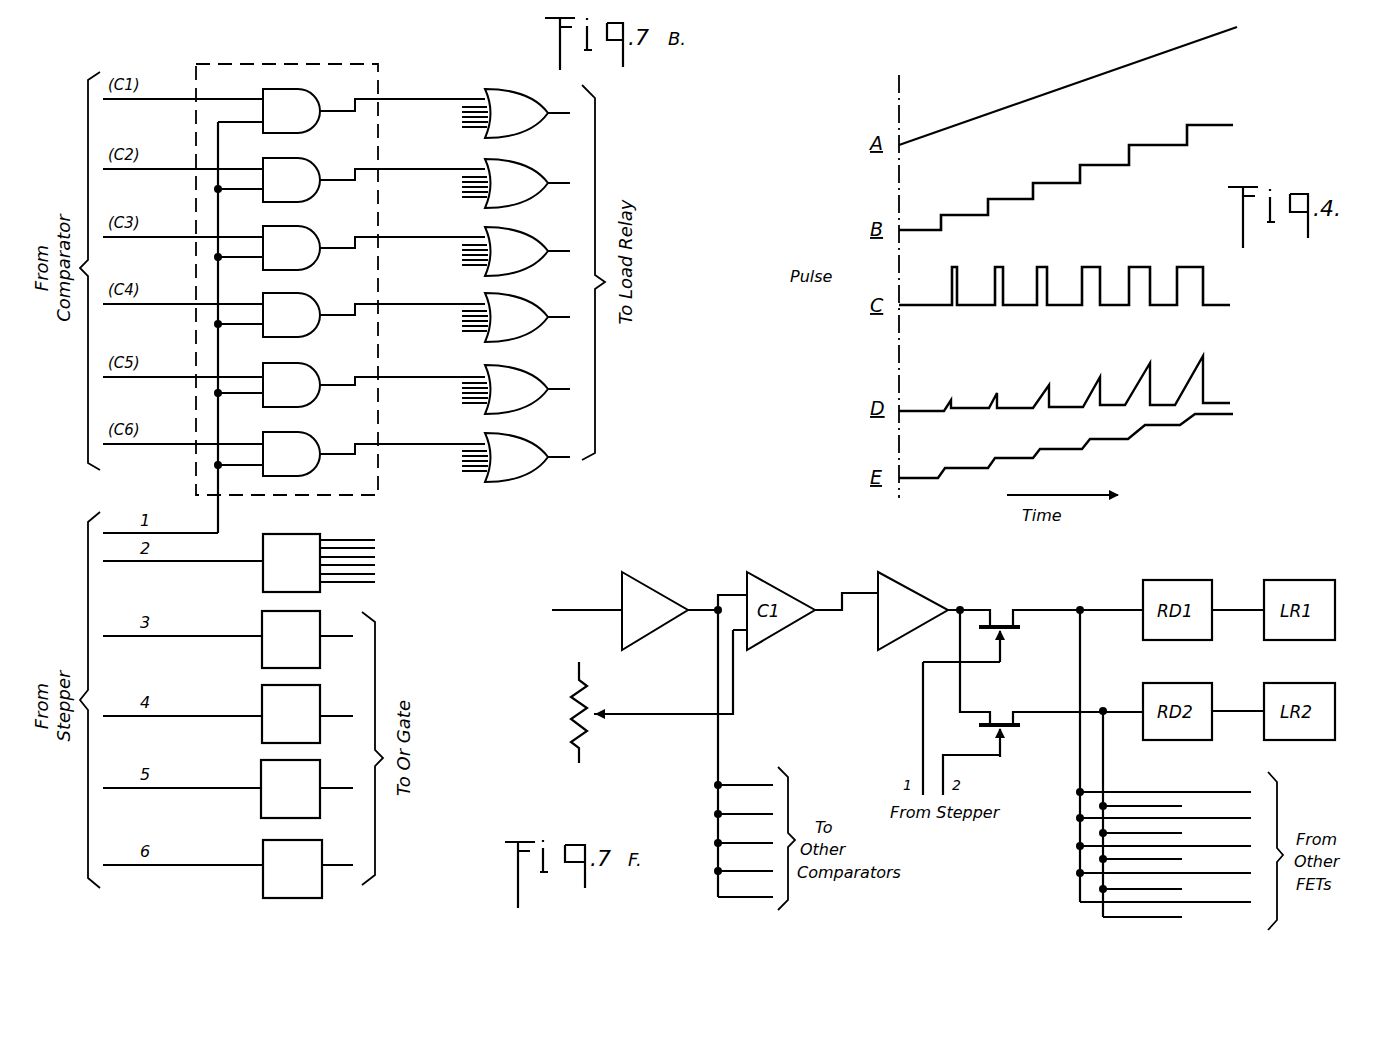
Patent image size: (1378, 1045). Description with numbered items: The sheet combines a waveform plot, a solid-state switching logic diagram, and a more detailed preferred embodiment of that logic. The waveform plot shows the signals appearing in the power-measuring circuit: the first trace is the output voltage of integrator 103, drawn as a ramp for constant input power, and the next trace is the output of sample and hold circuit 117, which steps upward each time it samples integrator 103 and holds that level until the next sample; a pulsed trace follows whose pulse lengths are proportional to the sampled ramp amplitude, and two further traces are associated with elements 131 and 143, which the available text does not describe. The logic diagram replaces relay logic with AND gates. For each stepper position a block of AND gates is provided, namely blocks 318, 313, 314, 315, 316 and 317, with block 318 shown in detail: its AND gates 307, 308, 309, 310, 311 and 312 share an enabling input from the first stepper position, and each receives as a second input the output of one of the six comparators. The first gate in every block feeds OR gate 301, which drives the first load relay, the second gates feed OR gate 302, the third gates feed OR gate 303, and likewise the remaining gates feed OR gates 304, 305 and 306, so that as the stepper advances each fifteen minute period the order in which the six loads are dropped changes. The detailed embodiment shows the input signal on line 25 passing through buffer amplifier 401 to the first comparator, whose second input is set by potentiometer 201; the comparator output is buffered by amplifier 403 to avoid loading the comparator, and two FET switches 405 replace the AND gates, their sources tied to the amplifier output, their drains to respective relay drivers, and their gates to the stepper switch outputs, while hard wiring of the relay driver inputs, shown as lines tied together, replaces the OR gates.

In FIG. 7F, the line 25 is at (578, 610).
In FIG. 7F, the potentiometer 201 is at (572, 727).
In FIG. 7B, the OR gate 301 is at (557, 90).
In FIG. 7B, the OR gate 302 is at (557, 160).
In FIG. 7B, the OR gate 303 is at (557, 228).
In FIG. 7B, the OR gate 304 is at (557, 292).
In FIG. 7B, the OR gate 305 is at (557, 365).
In FIG. 7B, the OR gate 306 is at (557, 434).
In FIG. 7B, the AND gate 307 is at (318, 98).
In FIG. 7B, the AND gate 308 is at (318, 167).
In FIG. 7B, the AND gate 309 is at (318, 236).
In FIG. 7B, the AND gate 310 is at (315, 302).
In FIG. 7B, the AND gate 311 is at (313, 370).
In FIG. 7B, the AND gate 312 is at (317, 438).
In FIG. 7B, the gating module 313 is at (315, 535).
In FIG. 7B, the gating module 314 is at (313, 615).
In FIG. 7B, the gating module 315 is at (308, 692).
In FIG. 7B, the gating module 316 is at (310, 767).
In FIG. 7B, the gating module 317 is at (310, 846).
In FIG. 7B, the block of AND gates 318 is at (360, 42).
In FIG. 7F, the buffer amplifier 401 is at (657, 595).
In FIG. 7F, the buffer amplifier 403 is at (915, 595).
In FIG. 7F, the FET switch 405 is at (990, 612).
In FIG. 4, the integrator 103 is at (1011, 86).
In FIG. 4, the sample and hold circuit 117 is at (1009, 177).
In FIG. 4, the integrator output waveform D 131 is at (1008, 383).
In FIG. 4, the sample and hold output waveform E 143 is at (1008, 446).